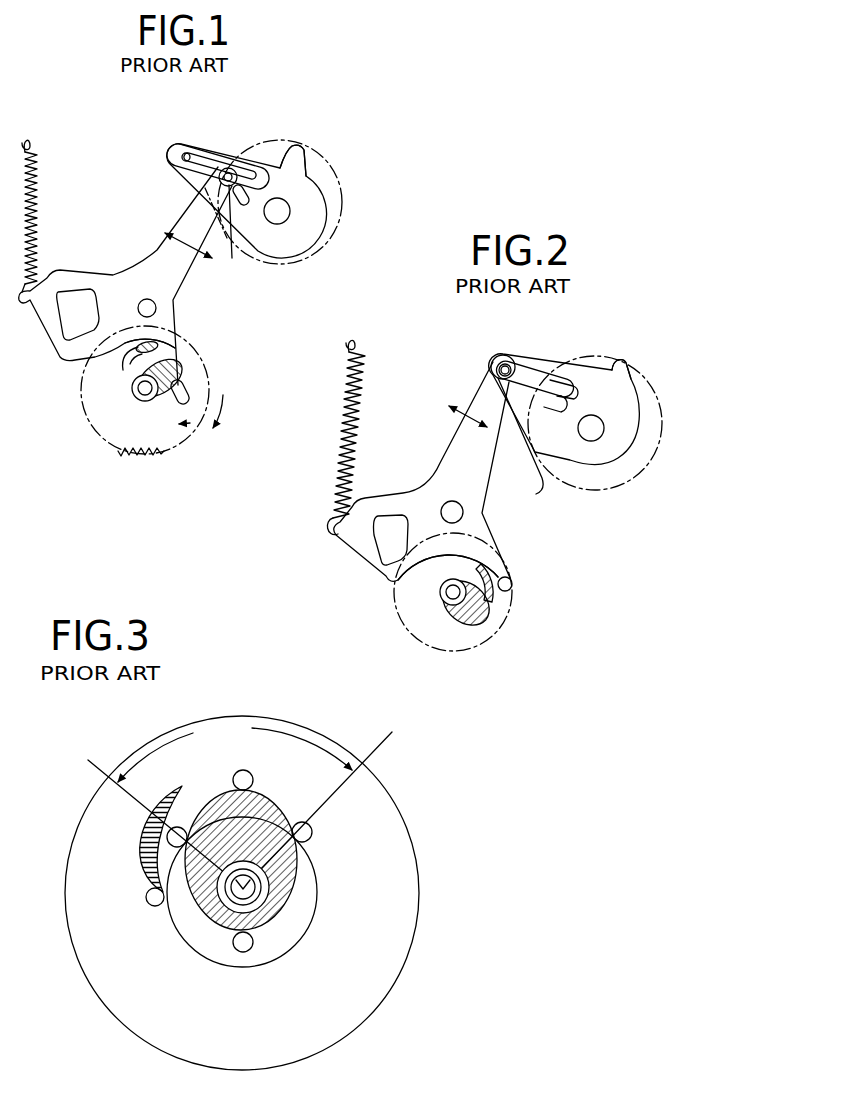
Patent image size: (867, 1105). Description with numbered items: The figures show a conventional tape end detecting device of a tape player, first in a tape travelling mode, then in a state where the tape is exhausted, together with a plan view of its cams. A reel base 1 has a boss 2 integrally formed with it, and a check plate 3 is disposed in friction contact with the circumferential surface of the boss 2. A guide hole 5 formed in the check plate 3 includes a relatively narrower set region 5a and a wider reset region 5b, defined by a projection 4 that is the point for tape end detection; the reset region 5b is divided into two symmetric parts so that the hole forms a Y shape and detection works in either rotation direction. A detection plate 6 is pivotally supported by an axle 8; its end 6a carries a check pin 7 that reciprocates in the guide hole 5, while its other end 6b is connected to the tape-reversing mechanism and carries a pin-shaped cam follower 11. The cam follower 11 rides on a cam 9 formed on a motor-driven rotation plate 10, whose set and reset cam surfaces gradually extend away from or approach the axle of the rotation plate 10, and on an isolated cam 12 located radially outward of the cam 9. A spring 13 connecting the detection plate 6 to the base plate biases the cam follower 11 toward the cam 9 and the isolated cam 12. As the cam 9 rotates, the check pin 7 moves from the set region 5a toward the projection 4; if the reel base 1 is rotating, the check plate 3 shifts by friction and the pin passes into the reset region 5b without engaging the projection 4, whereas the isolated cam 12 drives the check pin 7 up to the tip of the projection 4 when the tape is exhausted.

In FIG. 1, the reel base 1 is at (266, 147).
In FIG. 2, the reel base 1 is at (584, 368).
In FIG. 1, the boss 2 is at (282, 211).
In FIG. 2, the boss 2 is at (596, 428).
In FIG. 1, the check plate 3 is at (303, 158).
In FIG. 2, the check plate 3 is at (618, 378).
In FIG. 1, the projection 4 is at (270, 170).
In FIG. 2, the projection 4 is at (590, 395).
In FIG. 1, the guide hole 5 is at (187, 148).
In FIG. 2, the guide hole 5 is at (525, 378).
In FIG. 1, the set region 5a is at (181, 157).
In FIG. 2, the set region 5a is at (512, 366).
In FIG. 1, the reset region 5b is at (234, 238).
In FIG. 2, the reset region 5b is at (534, 449).
In FIG. 1, the detection plate 6 is at (104, 285).
In FIG. 2, the detection plate 6 is at (482, 484).
In FIG. 1, the end of detection plate 6a is at (194, 218).
In FIG. 2, the end of detection plate 6a is at (466, 447).
In FIG. 1, the end of detection plate 6b is at (176, 348).
In FIG. 2, the end of detection plate 6b is at (486, 562).
In FIG. 1, the check pin 7 is at (230, 172).
In FIG. 2, the check pin 7 is at (502, 360).
In FIG. 1, the axle 8 is at (158, 308).
In FIG. 2, the axle 8 is at (464, 512).
In FIG. 1, the cam 9 is at (163, 403).
In FIG. 2, the cam 9 is at (440, 597).
In FIG. 3, the cam 9 is at (276, 806).
In FIG. 1, the rotation plate 10 is at (185, 437).
In FIG. 2, the rotation plate 10 is at (492, 632).
In FIG. 3, the rotation plate 10 is at (318, 1053).
In FIG. 1, the cam follower 11 is at (185, 389).
In FIG. 2, the cam follower 11 is at (512, 585).
In FIG. 3, the cam follower 11 is at (146, 897).
In FIG. 1, the isolated cam 12 is at (88, 376).
In FIG. 2, the isolated cam 12 is at (500, 598).
In FIG. 3, the isolated cam 12 is at (140, 834).
In FIG. 1, the spring 13 is at (38, 212).
In FIG. 2, the spring 13 is at (345, 424).